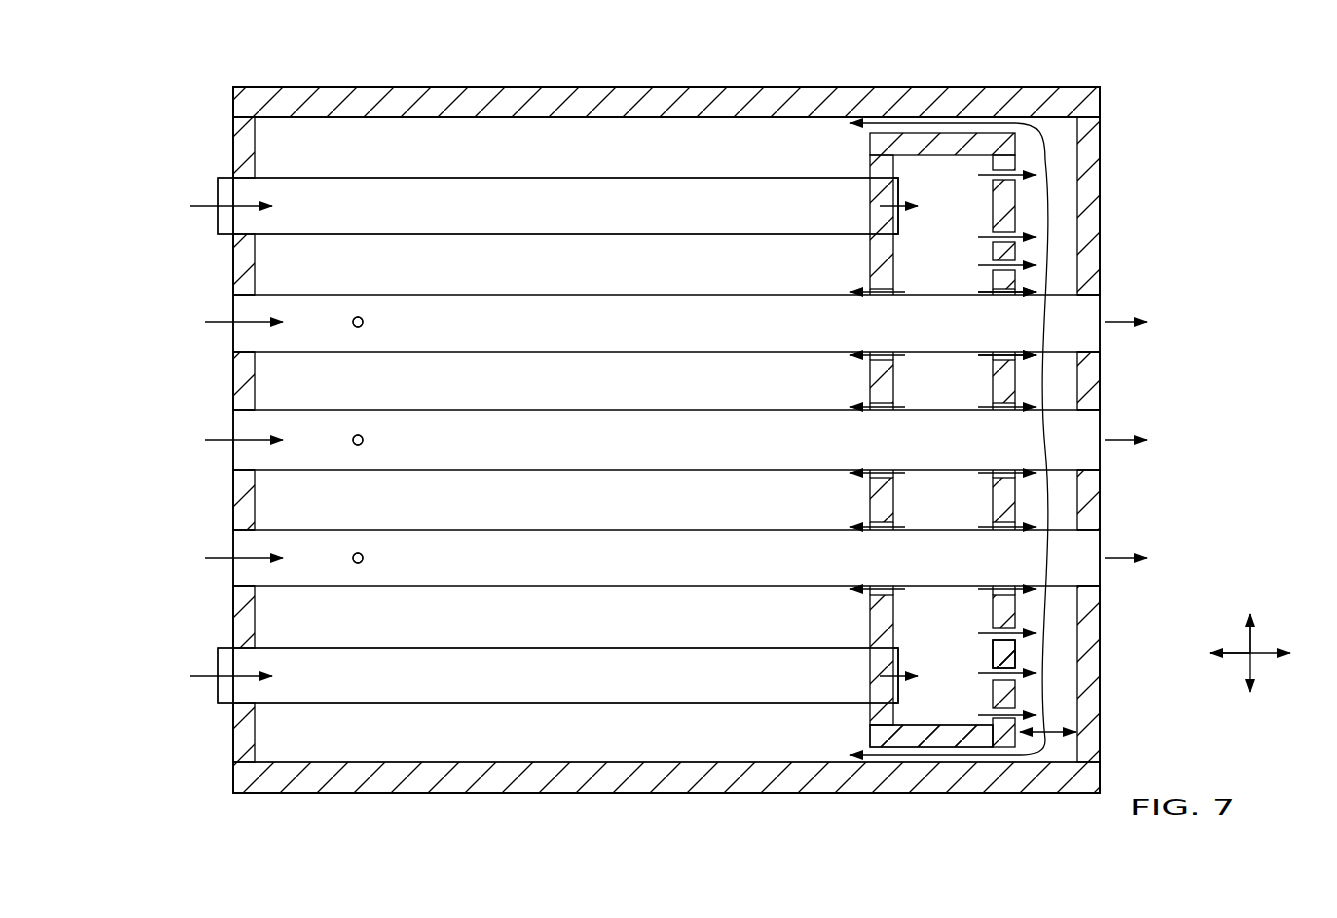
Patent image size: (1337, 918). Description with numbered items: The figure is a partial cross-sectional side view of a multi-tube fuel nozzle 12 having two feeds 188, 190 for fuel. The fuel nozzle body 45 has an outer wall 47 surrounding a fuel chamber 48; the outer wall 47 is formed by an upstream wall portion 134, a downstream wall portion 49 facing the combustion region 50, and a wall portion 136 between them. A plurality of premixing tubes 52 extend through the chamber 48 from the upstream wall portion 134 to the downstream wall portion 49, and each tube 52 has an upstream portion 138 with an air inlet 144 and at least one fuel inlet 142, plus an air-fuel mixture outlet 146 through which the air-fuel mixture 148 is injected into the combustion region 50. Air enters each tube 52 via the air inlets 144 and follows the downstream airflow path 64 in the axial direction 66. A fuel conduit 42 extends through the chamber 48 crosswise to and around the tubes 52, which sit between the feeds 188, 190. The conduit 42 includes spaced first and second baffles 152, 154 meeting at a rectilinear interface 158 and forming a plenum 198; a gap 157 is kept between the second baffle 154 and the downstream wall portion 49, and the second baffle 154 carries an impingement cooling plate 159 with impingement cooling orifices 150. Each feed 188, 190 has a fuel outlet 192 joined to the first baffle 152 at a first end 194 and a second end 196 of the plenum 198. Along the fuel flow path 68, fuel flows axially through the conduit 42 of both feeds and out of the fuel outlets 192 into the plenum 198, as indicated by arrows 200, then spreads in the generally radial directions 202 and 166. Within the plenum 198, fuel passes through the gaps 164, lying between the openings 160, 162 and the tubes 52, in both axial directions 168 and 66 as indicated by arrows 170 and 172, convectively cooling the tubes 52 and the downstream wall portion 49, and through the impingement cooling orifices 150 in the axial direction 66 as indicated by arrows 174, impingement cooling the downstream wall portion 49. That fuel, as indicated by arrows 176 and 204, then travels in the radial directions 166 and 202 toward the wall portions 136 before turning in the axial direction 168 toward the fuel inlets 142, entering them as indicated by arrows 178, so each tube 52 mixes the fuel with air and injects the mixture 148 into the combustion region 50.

The fuel nozzle 12 is at (1203, 92).
The fuel conduit 42 is at (531, 186).
The fuel nozzle body 45 is at (638, 88).
The outer wall 47 is at (690, 88).
The chamber 48 is at (543, 132).
The downstream wall portion 49 is at (1095, 165).
The combustion region 50 is at (1200, 372).
The tubes 52 is at (535, 420).
The downstream airflow path 64 is at (200, 586).
The axial direction 66 is at (1262, 653).
The fuel flow path 68 is at (188, 706).
The upstream wall portion 134 is at (236, 148).
The wall portion 136 is at (808, 88).
The upstream portion 138 is at (323, 318).
The fuel inlet 142 is at (366, 328).
The air inlet 144 is at (240, 312).
The air-fuel mixture outlet 146 is at (1097, 316).
The air-fuel mixture 148 is at (1118, 326).
The impingement cooling orifices 150 is at (1027, 177).
The first baffle 152 is at (880, 598).
The second baffle 154 is at (1017, 657).
The gap 157 is at (1060, 740).
The interface 158 is at (945, 133).
The impingement cooling plate 159 is at (1036, 677).
The first fuel passage 160 is at (855, 350).
The second openings 162 is at (989, 424).
The gaps 164 is at (989, 440).
The radial direction 166 is at (1245, 642).
The axial direction 168 is at (1240, 656).
The arrows 170 is at (880, 350).
The arrows 172 is at (994, 298).
The arrows 174 is at (1036, 292).
The arrows 176 is at (1043, 132).
The arrows 178 is at (366, 430).
The feed 188 is at (228, 195).
The feed 190 is at (228, 665).
The fuel outlet 192 is at (805, 215).
The first end 194 is at (975, 162).
The second end 196 is at (910, 728).
The plenum 198 is at (897, 720).
The arrows 200 is at (920, 214).
The radial direction 202 is at (1255, 666).
The arrows 204 is at (1045, 762).